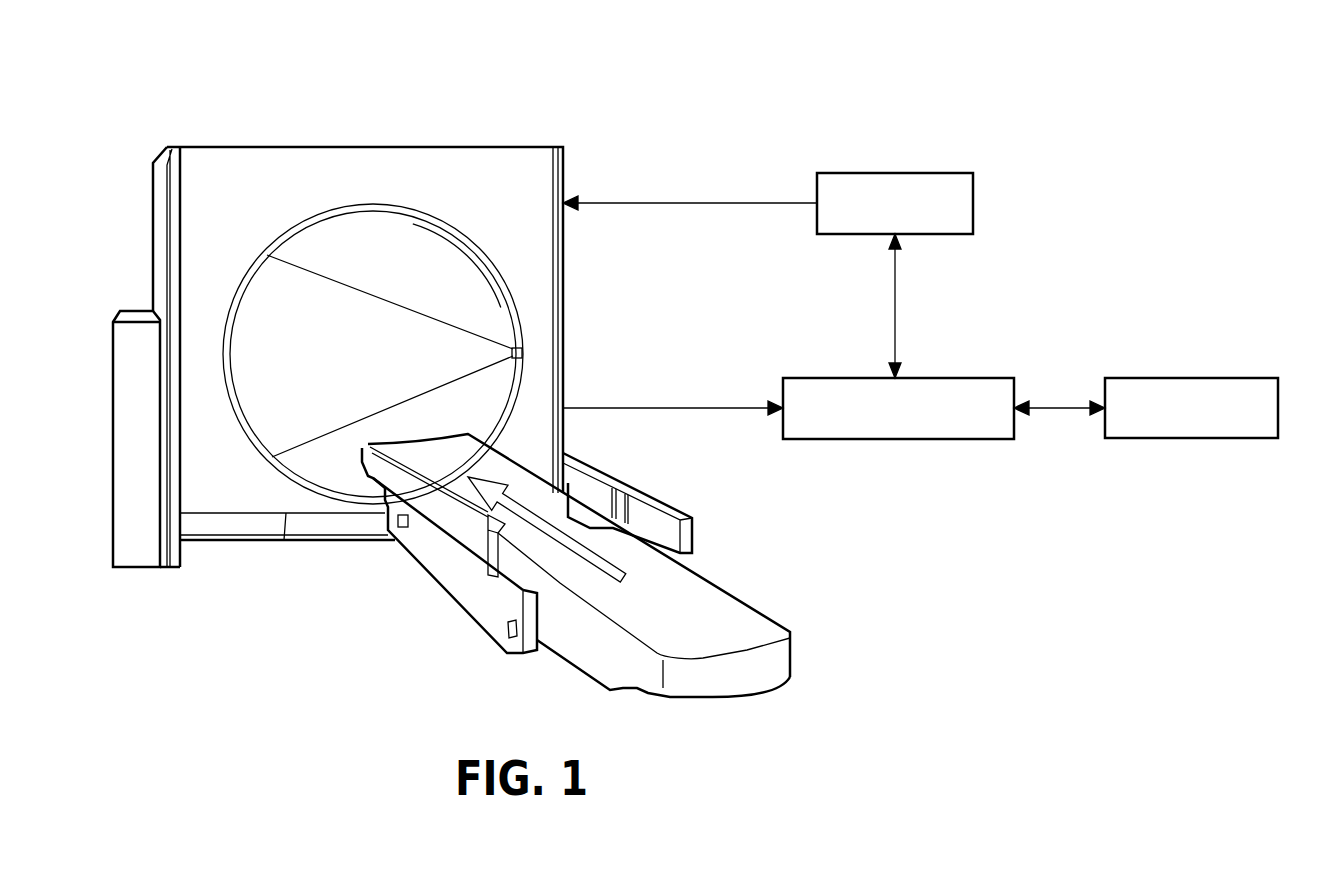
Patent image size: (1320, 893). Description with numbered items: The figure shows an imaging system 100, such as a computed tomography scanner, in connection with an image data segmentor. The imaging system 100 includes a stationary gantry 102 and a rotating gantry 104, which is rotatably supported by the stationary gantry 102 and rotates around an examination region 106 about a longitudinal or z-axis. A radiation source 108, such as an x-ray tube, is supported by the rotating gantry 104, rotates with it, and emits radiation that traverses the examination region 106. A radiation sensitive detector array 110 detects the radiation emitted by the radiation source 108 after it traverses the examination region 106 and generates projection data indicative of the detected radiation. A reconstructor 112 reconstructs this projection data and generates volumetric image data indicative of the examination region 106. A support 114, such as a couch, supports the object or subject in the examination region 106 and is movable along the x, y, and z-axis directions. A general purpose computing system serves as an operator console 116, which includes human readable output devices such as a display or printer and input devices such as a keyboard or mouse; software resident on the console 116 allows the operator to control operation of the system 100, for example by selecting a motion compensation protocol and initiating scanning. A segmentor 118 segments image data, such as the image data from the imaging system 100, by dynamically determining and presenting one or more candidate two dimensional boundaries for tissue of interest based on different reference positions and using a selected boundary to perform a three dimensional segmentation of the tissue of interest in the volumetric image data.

The imaging system 100 is at (126, 88).
The stationary gantry 102 is at (237, 147).
The rotating gantry 104 is at (277, 242).
The examination region 106 is at (368, 368).
The radiation source 108 is at (523, 352).
The radiation sensitive detector array 110 is at (245, 302).
The reconstructor 112 is at (808, 378).
The support 114 is at (723, 610).
The operator console 116 is at (948, 174).
The segmentor 118 is at (1148, 378).